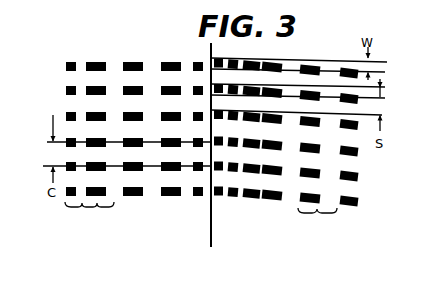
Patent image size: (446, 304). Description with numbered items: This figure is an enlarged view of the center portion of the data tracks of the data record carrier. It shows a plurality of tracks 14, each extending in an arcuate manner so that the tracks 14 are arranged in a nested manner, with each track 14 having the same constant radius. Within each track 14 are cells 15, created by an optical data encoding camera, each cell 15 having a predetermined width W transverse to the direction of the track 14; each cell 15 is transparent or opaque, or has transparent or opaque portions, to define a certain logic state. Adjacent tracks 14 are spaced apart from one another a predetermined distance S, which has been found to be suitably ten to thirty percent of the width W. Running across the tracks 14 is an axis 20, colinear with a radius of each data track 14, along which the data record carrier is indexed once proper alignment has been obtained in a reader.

The track 14 is at (61, 69).
The cell 15 is at (105, 208).
The axis 20 is at (211, 225).